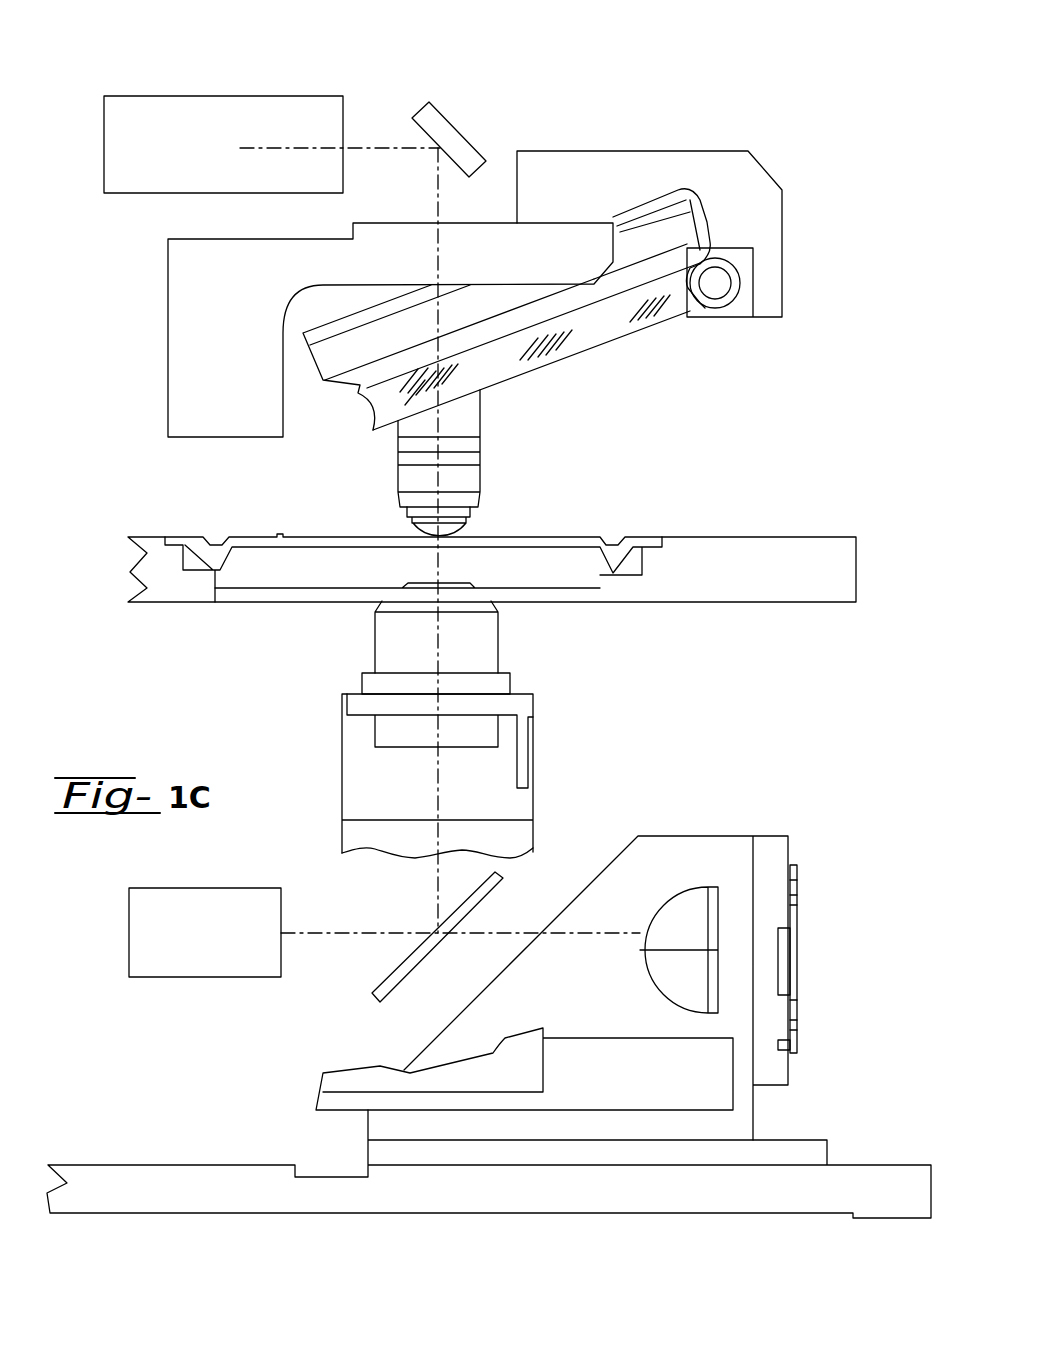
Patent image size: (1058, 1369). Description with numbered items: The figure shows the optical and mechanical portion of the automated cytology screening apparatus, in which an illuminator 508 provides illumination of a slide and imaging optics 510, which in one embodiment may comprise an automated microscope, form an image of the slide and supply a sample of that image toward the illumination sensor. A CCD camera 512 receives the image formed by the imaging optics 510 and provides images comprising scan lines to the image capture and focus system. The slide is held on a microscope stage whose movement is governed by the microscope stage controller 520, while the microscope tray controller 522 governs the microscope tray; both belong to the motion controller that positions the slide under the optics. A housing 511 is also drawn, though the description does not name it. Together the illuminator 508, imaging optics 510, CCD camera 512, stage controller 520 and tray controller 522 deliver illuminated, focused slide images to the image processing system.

The illuminator 508 is at (200, 977).
The imaging optics 510 is at (346, 472).
The housing 511 is at (779, 159).
The CCD camera 512 is at (275, 95).
The microscope stage controller 520 is at (803, 537).
The microscope tray controller 522 is at (703, 215).